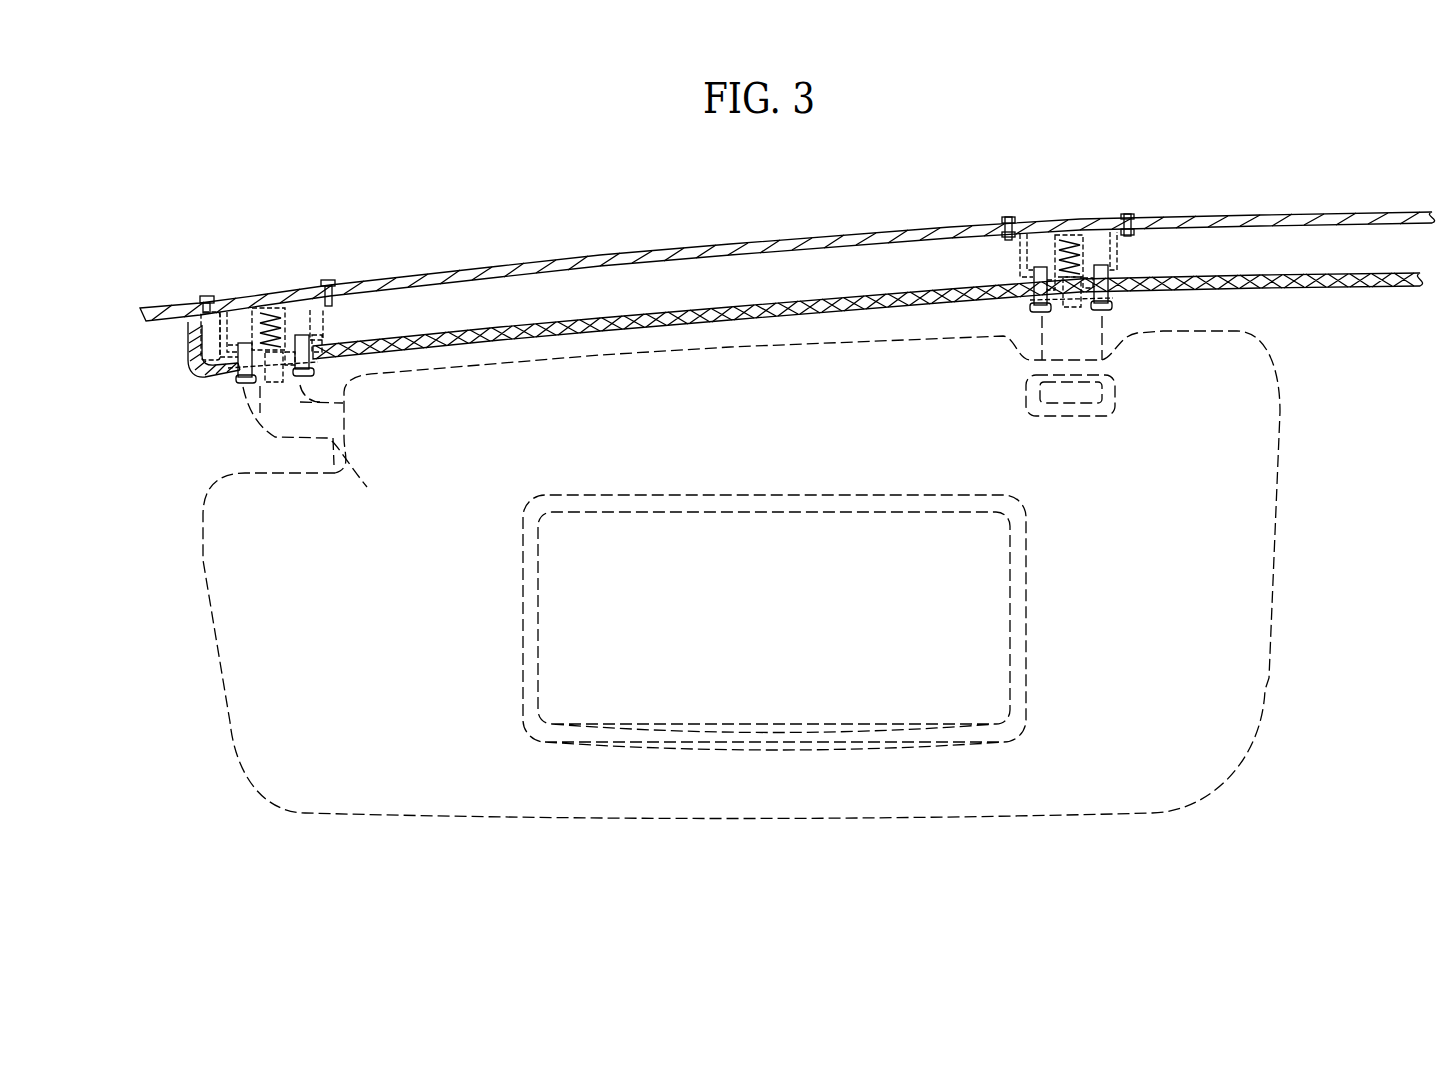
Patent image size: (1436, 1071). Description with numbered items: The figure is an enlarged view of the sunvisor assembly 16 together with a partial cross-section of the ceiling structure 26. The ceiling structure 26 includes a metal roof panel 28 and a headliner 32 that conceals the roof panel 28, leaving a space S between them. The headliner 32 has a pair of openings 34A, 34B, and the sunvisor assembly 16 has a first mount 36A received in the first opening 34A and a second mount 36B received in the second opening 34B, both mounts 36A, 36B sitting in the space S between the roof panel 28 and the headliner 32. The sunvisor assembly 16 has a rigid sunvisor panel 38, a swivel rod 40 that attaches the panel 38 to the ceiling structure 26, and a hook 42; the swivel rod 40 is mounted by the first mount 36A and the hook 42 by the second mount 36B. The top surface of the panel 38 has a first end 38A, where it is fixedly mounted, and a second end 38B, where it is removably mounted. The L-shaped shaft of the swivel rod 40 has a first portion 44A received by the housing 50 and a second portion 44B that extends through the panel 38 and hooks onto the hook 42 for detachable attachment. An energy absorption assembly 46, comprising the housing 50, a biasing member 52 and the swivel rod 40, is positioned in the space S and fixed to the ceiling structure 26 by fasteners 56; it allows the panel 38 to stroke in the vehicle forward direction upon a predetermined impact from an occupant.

The sunvisor assembly 16 is at (180, 560).
The ceiling structure 26 is at (1094, 142).
The roof panel 28 is at (330, 318).
The headliner 32 is at (1337, 290).
The first opening 34A is at (267, 337).
The second opening 34B is at (1056, 262).
The first mount 36A is at (172, 389).
The second mount 36B is at (1246, 324).
The sunvisor panel 38 is at (1025, 813).
The first end 38A is at (393, 376).
The second end 38B is at (1153, 335).
The swivel rod 40 is at (178, 490).
The hook 42 is at (1103, 324).
The first portion 44A is at (257, 418).
The second portion 44B is at (353, 470).
The energy absorption assembly 46 is at (160, 343).
The housing 50 is at (263, 300).
The biasing member 52 is at (294, 322).
The fasteners 56 is at (247, 388).
The space S is at (1345, 238).